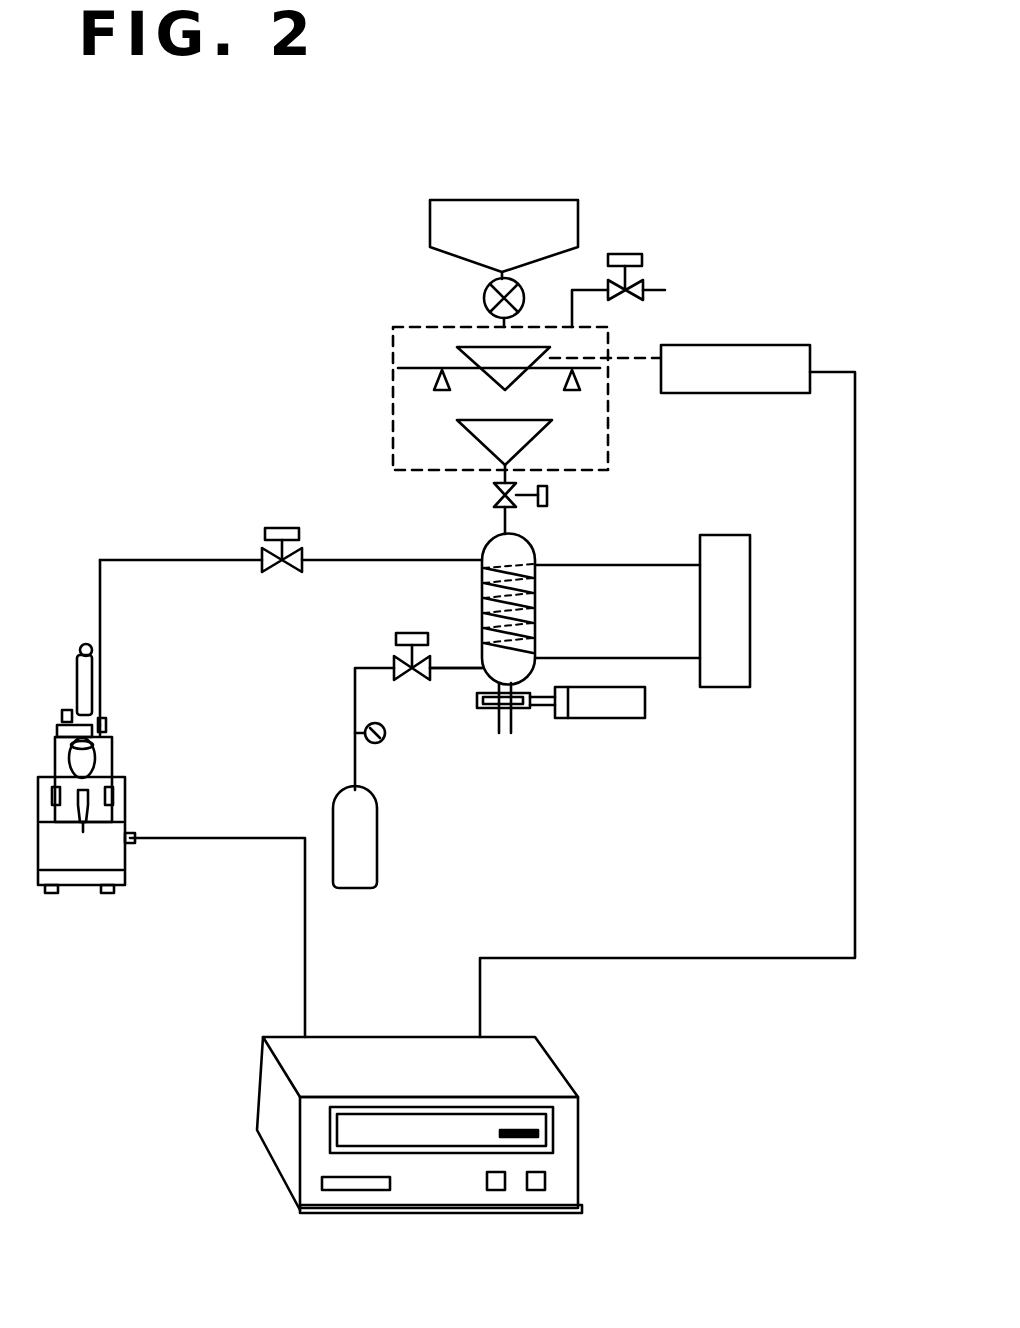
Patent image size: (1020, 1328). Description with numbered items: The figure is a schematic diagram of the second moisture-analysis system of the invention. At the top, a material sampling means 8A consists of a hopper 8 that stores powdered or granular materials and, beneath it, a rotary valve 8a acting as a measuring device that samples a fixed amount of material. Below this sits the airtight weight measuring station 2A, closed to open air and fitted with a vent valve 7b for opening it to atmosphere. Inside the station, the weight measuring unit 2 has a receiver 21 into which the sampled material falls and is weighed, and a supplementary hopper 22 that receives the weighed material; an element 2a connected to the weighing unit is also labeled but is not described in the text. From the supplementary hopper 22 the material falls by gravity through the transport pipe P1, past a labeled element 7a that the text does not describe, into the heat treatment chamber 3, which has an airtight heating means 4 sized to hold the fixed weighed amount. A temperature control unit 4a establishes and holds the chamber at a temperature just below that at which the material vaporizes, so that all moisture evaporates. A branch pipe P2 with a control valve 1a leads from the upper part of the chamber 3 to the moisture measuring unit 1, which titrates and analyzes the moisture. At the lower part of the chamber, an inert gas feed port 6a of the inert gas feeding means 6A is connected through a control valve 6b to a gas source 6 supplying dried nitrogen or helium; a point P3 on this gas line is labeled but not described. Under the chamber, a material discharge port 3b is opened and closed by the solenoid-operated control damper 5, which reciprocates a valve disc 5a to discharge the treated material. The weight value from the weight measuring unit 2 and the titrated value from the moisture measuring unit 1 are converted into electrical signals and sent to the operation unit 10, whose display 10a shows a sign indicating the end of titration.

The material sampling means 8A is at (403, 190).
The hopper 8 is at (562, 212).
The rotary valve 8a is at (487, 294).
The vent valve 7b is at (640, 284).
The weight measuring station 2A is at (392, 388).
The weight measuring unit 2 is at (604, 387).
The receiver 21 is at (515, 372).
The supplementary hopper 22 is at (528, 432).
The weight measuring instrument 2a is at (572, 396).
The shutoff valve 7a is at (547, 495).
The transport pipe P1 is at (502, 522).
The branch pipe P2 is at (364, 560).
The pressure point P3 is at (366, 667).
The control valve 1a is at (270, 568).
The moisture measuring unit 1 is at (105, 752).
The heat treatment chamber 3 is at (538, 547).
The heating means 4 is at (535, 606).
The temperature control unit 4a is at (750, 612).
The material discharge port 3b is at (505, 736).
The valve disc 5a is at (527, 712).
The control damper 5 is at (616, 712).
The inert gas feeding means 6A is at (342, 708).
The control valve 6b is at (405, 678).
The inert gas feed port 6a is at (470, 672).
The gas source 6 is at (377, 838).
The operation unit 10 is at (400, 1055).
The display 10a is at (538, 1135).